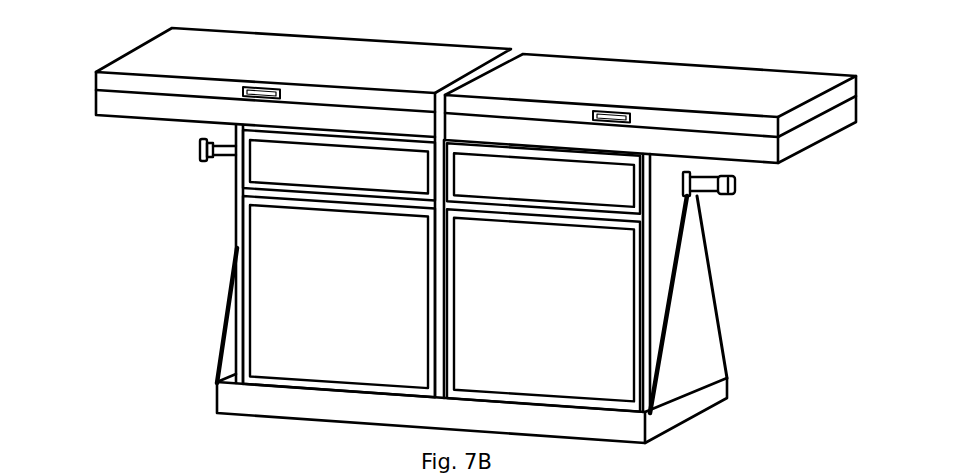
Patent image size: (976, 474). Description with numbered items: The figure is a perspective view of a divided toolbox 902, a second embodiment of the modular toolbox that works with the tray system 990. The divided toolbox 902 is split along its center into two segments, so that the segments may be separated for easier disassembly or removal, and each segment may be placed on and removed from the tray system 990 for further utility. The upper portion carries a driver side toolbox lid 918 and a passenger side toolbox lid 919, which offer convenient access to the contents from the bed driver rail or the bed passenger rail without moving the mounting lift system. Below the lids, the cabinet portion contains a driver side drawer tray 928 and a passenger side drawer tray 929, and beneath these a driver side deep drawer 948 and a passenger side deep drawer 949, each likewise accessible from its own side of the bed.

The divided toolbox 902 is at (556, 51).
The driver side toolbox lid 918 is at (190, 48).
The passenger side toolbox lid 919 is at (775, 85).
The driver side drawer tray 928 is at (312, 163).
The passenger side drawer tray 929 is at (578, 185).
The driver side deep drawer 948 is at (363, 319).
The passenger side deep drawer 949 is at (543, 330).
The tray system 990 is at (700, 405).